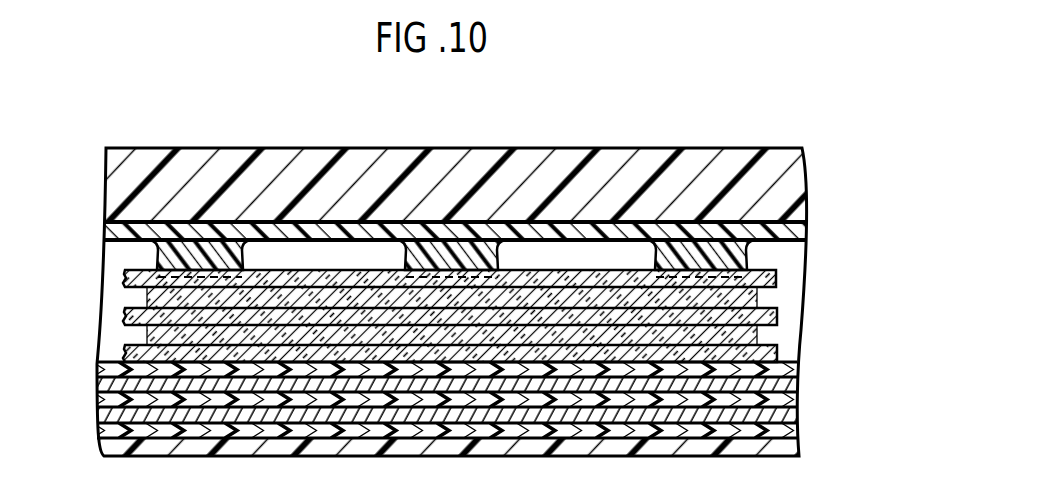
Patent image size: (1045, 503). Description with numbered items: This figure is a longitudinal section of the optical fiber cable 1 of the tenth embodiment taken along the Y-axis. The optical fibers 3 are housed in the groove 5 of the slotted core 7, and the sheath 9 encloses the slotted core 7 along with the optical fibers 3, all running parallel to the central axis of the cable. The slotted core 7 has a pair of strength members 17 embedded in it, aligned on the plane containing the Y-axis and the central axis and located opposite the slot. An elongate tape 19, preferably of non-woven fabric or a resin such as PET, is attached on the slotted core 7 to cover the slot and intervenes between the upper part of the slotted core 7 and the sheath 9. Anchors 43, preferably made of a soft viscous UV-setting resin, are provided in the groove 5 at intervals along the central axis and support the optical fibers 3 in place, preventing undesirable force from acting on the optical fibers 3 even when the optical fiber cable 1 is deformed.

The optical fiber cable 1 is at (774, 121).
The optical fibers 3 is at (776, 272).
The groove 5 is at (113, 357).
The slotted core 7 is at (785, 432).
The sheath 9 is at (797, 183).
The strength members 17 is at (788, 387).
The elongate tape 19 is at (797, 231).
The anchors 43 is at (210, 252).